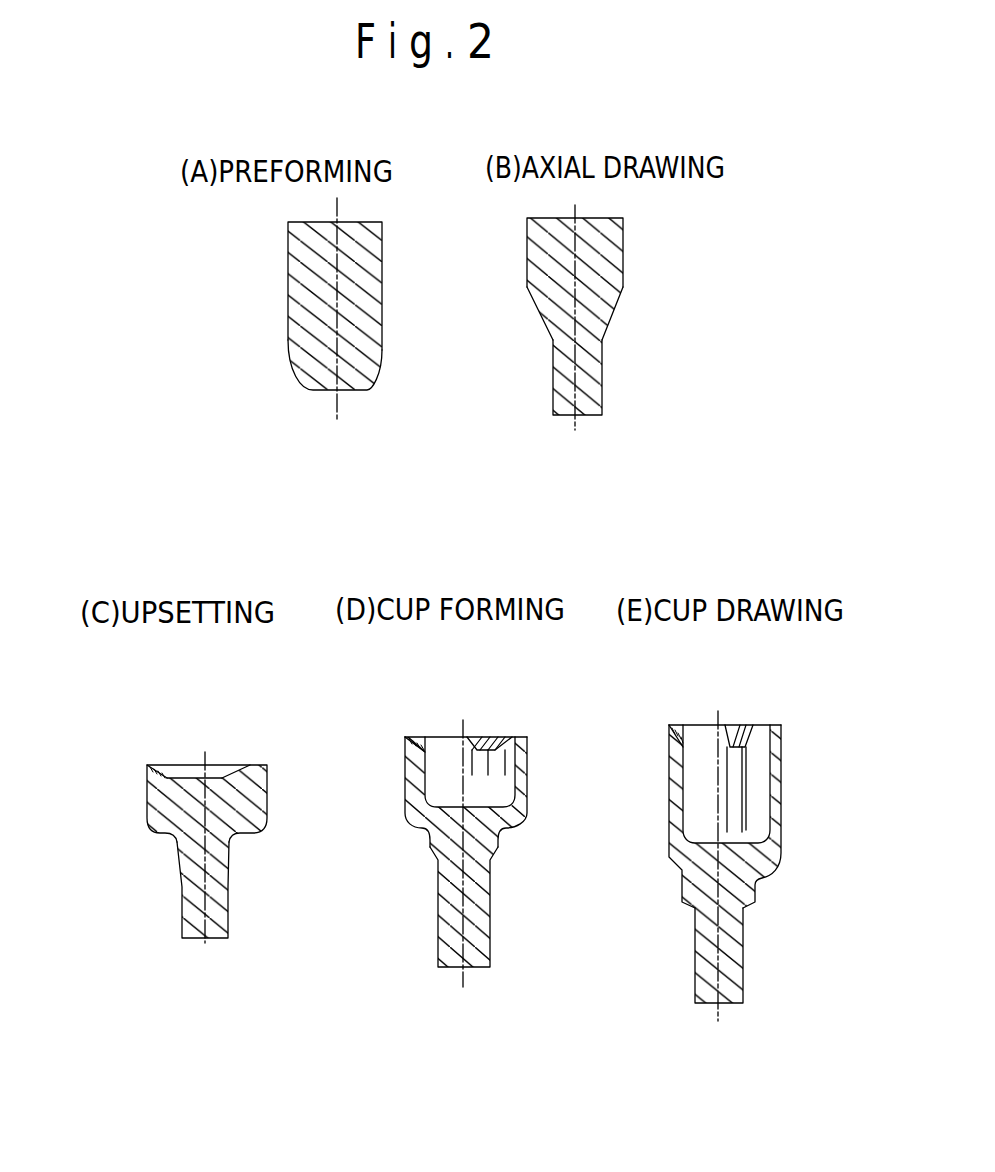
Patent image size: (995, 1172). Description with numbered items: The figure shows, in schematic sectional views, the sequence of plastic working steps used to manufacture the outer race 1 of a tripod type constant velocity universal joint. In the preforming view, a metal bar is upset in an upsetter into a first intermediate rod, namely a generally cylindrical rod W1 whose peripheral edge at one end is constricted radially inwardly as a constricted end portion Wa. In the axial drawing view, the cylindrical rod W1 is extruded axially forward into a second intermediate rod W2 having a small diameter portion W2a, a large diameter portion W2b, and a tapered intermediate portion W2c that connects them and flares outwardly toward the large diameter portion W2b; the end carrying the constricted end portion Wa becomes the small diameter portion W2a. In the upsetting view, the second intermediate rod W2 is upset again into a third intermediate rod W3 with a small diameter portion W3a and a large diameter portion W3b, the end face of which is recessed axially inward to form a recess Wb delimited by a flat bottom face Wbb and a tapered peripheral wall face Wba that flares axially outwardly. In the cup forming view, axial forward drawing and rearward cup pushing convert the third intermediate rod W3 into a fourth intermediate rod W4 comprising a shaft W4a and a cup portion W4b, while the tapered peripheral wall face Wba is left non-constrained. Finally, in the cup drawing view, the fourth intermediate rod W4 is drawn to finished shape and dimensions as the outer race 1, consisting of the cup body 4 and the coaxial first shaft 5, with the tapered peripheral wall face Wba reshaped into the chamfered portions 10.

The cylindrical rod W1 is at (283, 290).
The radially inwardly constricted end portion Wa is at (308, 383).
The second intermediate rod W2 is at (525, 270).
The large diameter portion W2b is at (620, 250).
The tapered intermediate portion W2c is at (605, 311).
The small diameter portion W2a is at (600, 387).
The third intermediate rod W3 is at (136, 792).
The recess Wb is at (188, 776).
The tapered peripheral wall face Wba is at (166, 776).
The flat bottom face Wbb is at (228, 778).
The large diameter portion W3b is at (258, 793).
The small diameter portion W3a is at (222, 917).
The fourth intermediate rod W4 is at (401, 819).
The cup portion W4b is at (530, 767).
The shaft W4a is at (490, 936).
The chamfered portions 10 is at (687, 724).
The cup body 4 is at (782, 791).
The outer race 1 is at (657, 840).
The first shaft 5 is at (735, 970).